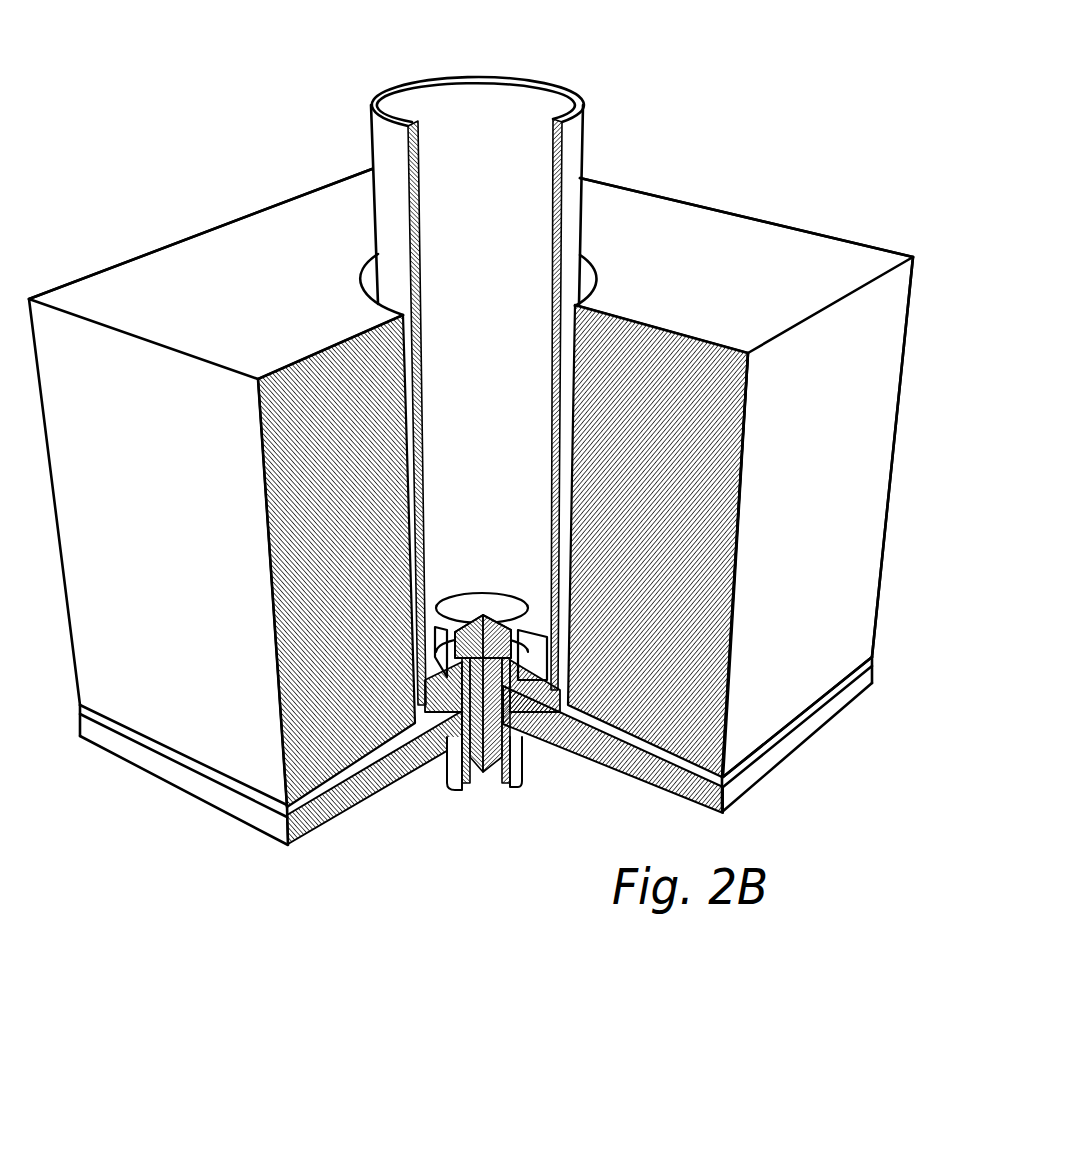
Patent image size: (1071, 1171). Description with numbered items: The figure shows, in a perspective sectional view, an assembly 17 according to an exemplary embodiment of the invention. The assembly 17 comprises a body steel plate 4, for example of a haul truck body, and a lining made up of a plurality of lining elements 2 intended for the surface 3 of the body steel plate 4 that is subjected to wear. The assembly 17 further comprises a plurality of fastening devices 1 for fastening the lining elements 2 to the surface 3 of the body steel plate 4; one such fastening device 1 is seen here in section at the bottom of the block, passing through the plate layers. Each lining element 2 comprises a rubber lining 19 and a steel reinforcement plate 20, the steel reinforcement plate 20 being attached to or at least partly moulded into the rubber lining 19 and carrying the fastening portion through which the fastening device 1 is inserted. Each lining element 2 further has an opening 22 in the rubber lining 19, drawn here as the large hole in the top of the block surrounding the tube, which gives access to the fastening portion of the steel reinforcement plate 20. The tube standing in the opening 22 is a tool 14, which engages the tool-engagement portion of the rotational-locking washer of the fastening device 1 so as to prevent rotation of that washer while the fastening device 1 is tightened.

The fastening device 1 is at (422, 860).
The lining element 2 is at (850, 175).
The surface 3 is at (760, 752).
The body steel plate 4 is at (805, 728).
The tool 14 is at (570, 150).
The assembly 17 is at (259, 93).
The rubber lining 19 is at (855, 572).
The steel reinforcement plate 20 is at (820, 703).
The opening 22 is at (598, 272).